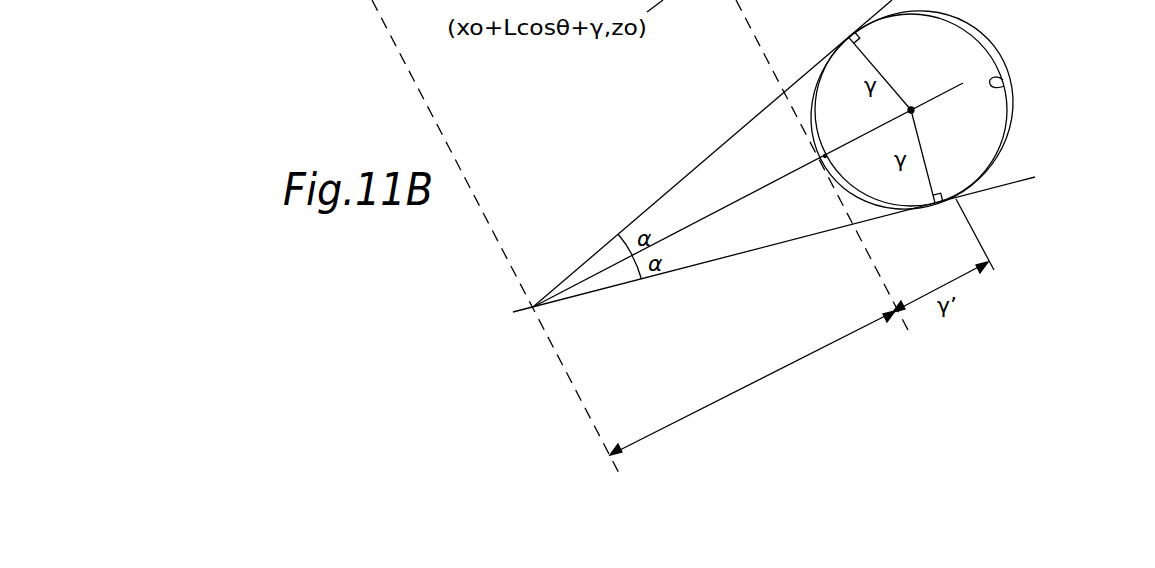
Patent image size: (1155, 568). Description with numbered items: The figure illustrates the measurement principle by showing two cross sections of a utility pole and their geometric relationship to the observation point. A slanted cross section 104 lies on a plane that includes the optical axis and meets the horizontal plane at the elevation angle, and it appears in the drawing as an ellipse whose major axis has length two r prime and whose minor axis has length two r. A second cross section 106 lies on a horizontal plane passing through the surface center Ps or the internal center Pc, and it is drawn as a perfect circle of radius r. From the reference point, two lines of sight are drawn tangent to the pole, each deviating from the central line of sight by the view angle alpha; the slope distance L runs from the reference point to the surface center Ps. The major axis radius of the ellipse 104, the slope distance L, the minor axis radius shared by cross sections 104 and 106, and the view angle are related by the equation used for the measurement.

The slanted cross section 104 is at (993, 42).
The cross section 106 is at (1017, 82).
The internal center Pc is at (911, 110).
The surface center Ps is at (825, 156).
The slope distance L is at (752, 383).